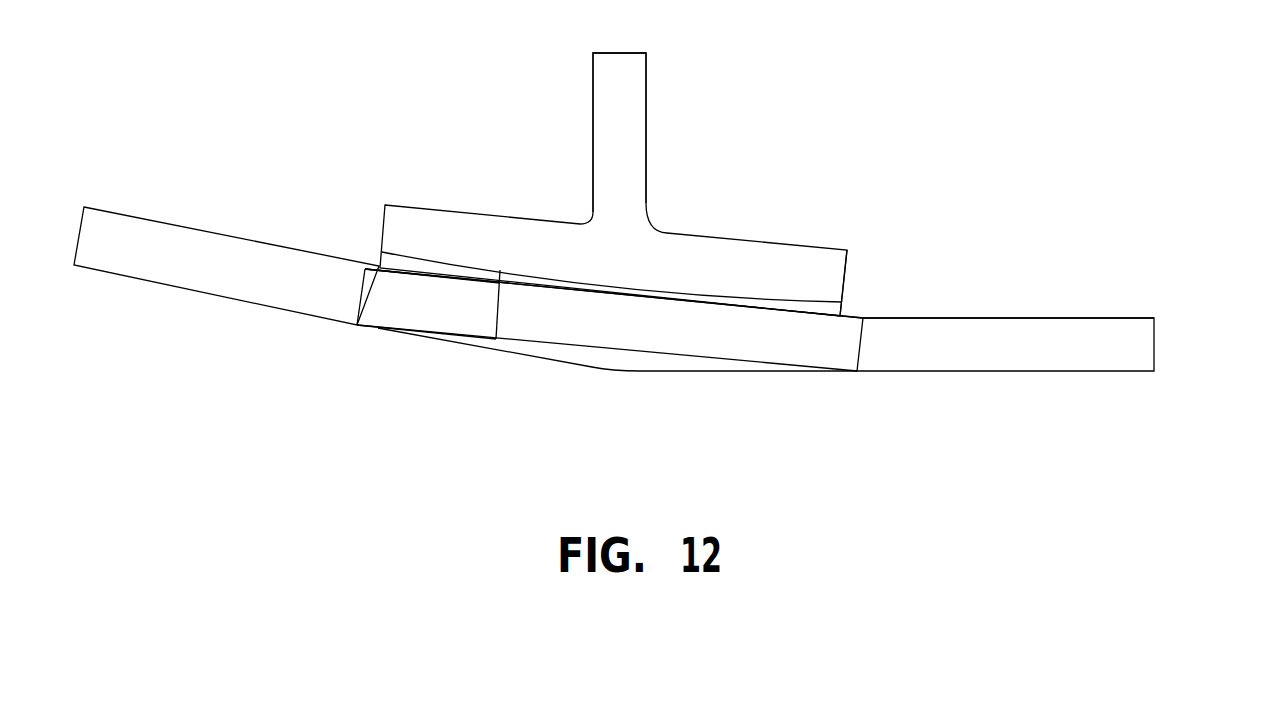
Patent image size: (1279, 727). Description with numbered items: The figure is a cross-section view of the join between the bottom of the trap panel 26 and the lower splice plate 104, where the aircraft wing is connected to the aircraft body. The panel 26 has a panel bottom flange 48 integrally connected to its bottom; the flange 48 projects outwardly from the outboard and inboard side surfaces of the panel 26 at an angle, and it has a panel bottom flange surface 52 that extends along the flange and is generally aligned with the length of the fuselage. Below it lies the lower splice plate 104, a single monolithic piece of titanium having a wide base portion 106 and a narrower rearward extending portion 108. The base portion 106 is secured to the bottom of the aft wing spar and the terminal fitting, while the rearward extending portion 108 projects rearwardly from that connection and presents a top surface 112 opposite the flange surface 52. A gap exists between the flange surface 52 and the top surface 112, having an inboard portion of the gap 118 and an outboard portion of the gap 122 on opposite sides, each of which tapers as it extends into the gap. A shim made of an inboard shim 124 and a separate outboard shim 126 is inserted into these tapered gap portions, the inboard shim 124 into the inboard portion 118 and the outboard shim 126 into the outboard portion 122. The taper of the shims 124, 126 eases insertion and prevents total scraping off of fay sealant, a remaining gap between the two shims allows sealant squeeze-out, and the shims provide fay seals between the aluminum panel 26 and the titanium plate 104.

The panel 26 is at (648, 96).
The panel bottom flange 48 is at (451, 207).
The panel bottom flange surface 52 is at (496, 340).
The lower splice plate 104 is at (1155, 316).
The base portion 106 is at (1068, 317).
The rearward extending portion 108 is at (862, 350).
The top surface 112 is at (762, 310).
The inboard portion of the gap 118 is at (846, 295).
The outboard portion of the gap 122 is at (375, 252).
The inboard shim 124 is at (828, 313).
The outboard shim 126 is at (403, 262).